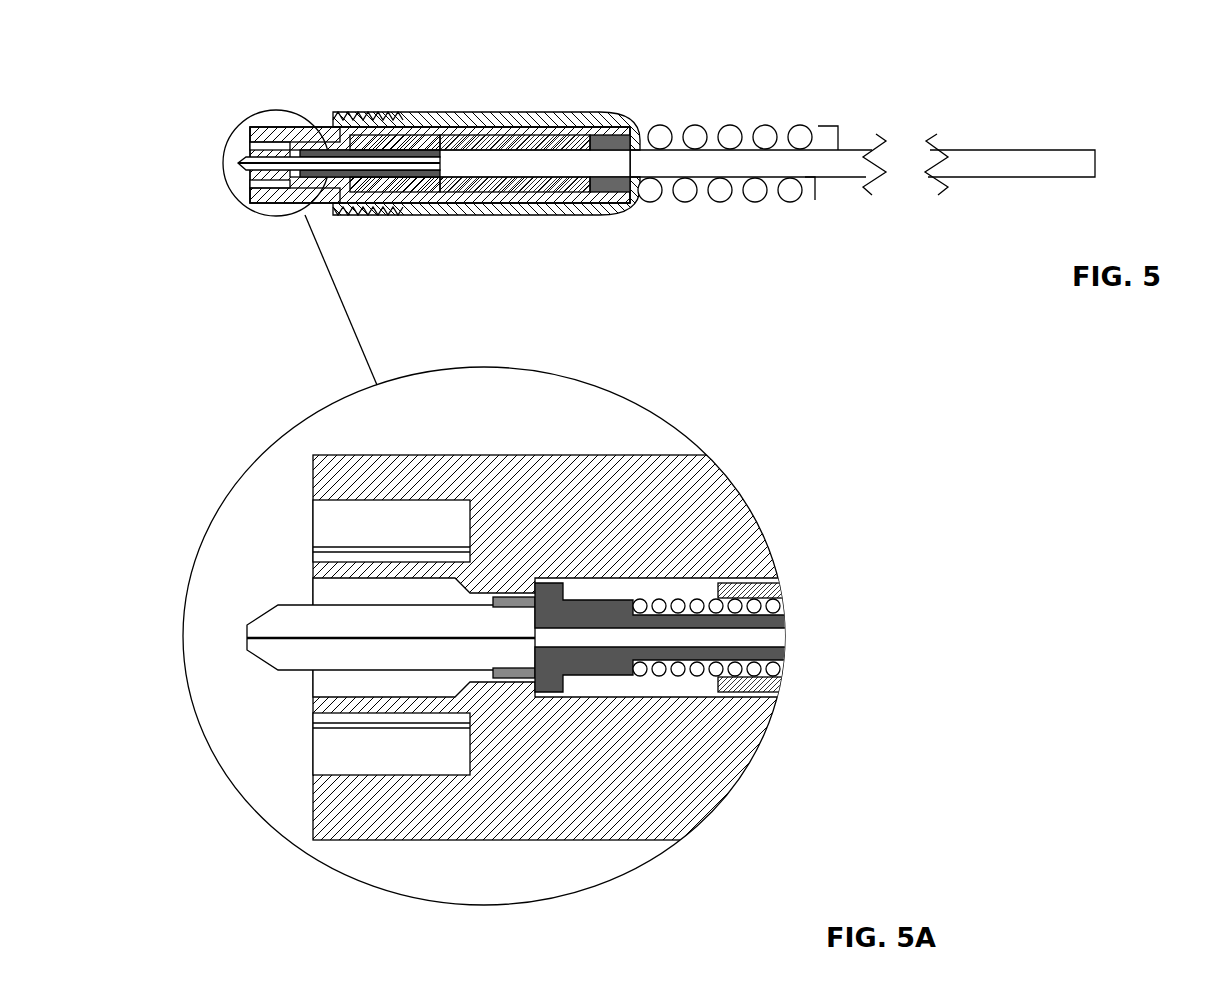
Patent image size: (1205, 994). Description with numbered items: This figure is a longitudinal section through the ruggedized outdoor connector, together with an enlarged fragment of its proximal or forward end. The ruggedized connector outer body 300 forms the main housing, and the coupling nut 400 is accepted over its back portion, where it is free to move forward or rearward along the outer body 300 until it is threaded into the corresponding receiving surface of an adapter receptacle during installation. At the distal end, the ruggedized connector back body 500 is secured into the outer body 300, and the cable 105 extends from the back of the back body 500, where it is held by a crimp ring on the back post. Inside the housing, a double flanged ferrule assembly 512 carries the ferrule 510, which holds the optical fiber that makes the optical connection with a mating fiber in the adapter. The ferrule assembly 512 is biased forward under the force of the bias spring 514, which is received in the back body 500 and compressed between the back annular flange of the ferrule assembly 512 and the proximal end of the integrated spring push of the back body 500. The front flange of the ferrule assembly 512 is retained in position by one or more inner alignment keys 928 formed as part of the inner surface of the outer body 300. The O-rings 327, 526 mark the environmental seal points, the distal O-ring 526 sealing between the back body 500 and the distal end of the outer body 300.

In FIG. 5, the cable 105 is at (862, 124).
In FIG. 5, the ruggedized connector outer body 300 is at (451, 249).
In FIG. 5, the O-ring 327 is at (352, 128).
In FIG. 5, the distal O-ring 526 is at (430, 137).
In FIG. 5, the coupling nut 400 is at (523, 123).
In FIG. 5, the ruggedized connector back body 500 is at (491, 220).
In FIG. 5A, the ruggedized connector back body 500 is at (589, 647).
In FIG. 5, the ferrule 510 is at (232, 175).
In FIG. 5, the ferrule assembly 512 is at (300, 145).
In FIG. 5A, the bias spring 514 is at (720, 565).
In FIG. 5A, the inner alignment key 928 is at (656, 718).